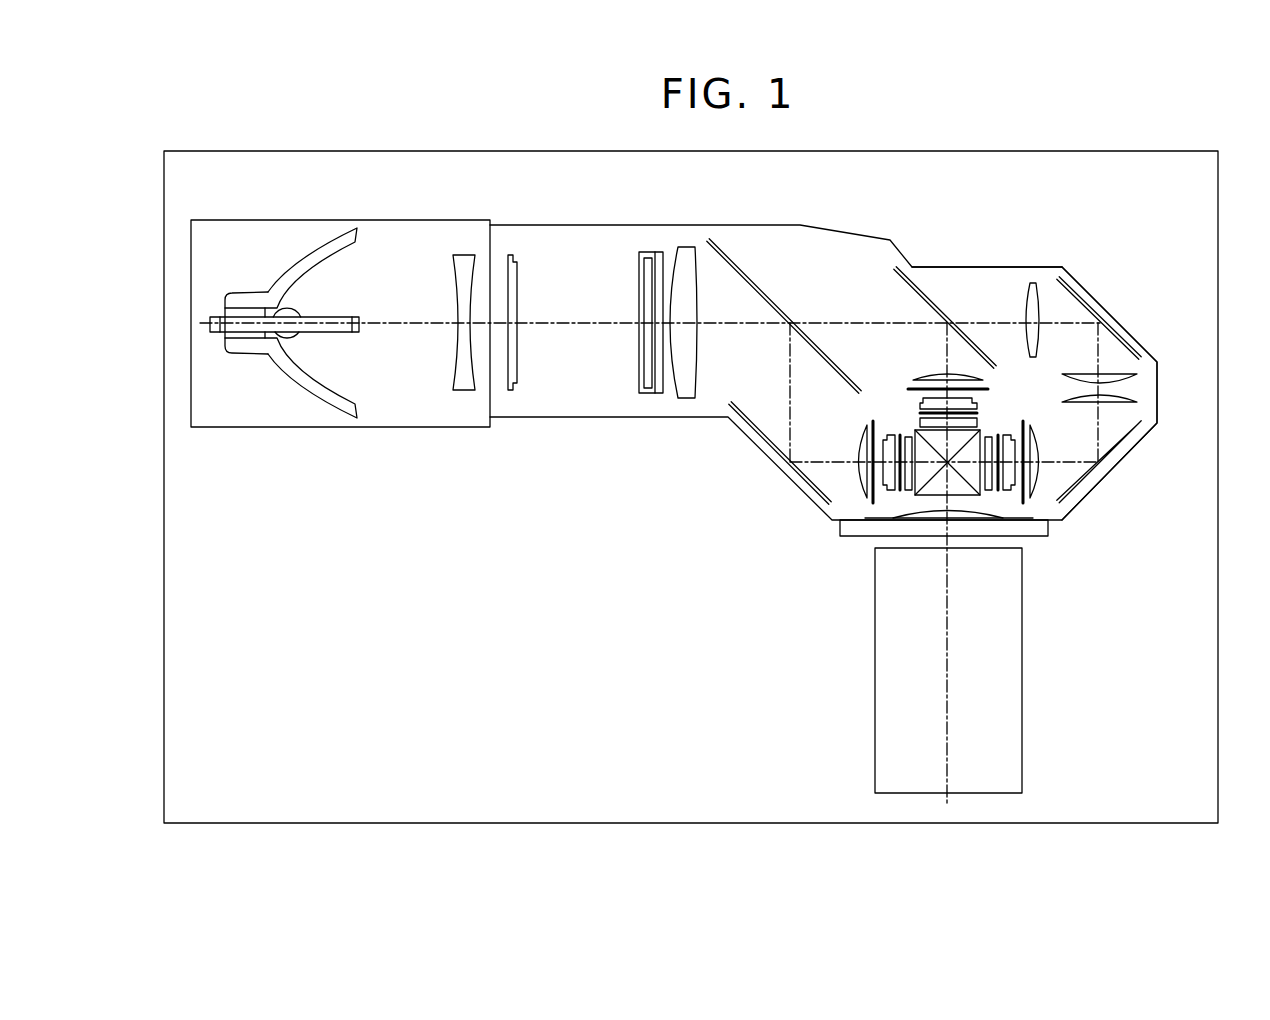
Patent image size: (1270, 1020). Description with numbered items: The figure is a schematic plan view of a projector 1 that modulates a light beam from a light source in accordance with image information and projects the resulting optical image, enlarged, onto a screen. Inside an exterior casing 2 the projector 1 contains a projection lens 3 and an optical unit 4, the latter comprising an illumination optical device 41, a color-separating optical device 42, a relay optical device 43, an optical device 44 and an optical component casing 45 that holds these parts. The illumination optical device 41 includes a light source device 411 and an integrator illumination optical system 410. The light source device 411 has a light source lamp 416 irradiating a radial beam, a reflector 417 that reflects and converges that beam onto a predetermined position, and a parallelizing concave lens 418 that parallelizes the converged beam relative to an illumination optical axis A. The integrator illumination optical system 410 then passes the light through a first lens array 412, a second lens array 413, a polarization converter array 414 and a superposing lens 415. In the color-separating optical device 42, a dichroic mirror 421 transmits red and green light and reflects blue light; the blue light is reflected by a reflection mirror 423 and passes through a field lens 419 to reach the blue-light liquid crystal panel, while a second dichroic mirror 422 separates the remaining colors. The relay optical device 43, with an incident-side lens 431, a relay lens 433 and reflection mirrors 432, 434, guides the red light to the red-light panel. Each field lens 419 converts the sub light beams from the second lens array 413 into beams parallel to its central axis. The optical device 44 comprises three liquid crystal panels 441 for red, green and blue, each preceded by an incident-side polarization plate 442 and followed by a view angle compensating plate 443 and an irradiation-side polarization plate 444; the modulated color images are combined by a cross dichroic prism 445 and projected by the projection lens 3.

The projector 1 is at (1008, 121).
The exterior casing 2 is at (1218, 262).
The projection lens 3 is at (1022, 680).
The optical unit 4 is at (650, 456).
The illumination optical device 41 is at (459, 410).
The color-separating optical device 42 is at (843, 262).
The relay optical device 43 is at (1106, 292).
The optical device 44 is at (1036, 400).
The optical component casing 45 is at (960, 266).
The integrator illumination optical system 410 is at (537, 194).
The light source device 411 is at (437, 113).
The first lens array 412 is at (517, 262).
The second lens array 413 is at (639, 252).
The polarization converter array 414 is at (649, 258).
The superposing lens 415 is at (688, 248).
The light source lamp 416 is at (300, 309).
The reflector 417 is at (334, 231).
The parallelizing concave lens 418 is at (463, 255).
The field lens 419 is at (930, 375).
The dichroic mirror 421 is at (746, 267).
The dichroic mirror 422 is at (929, 300).
The reflection mirror 423 is at (767, 440).
The incident-side lens 431 is at (1033, 283).
The reflection mirror 432 is at (1118, 334).
The relay lens 433 is at (1137, 397).
The reflection mirror 434 is at (1125, 444).
The liquid crystal panel 441 is at (920, 404).
The incident-side polarization plate 442 is at (908, 388).
The view angle compensating plate 443 is at (922, 413).
The irradiation-side polarization plate 444 is at (975, 421).
The cross dichroic prism 445 is at (957, 488).
The illumination optical axis A is at (563, 328).